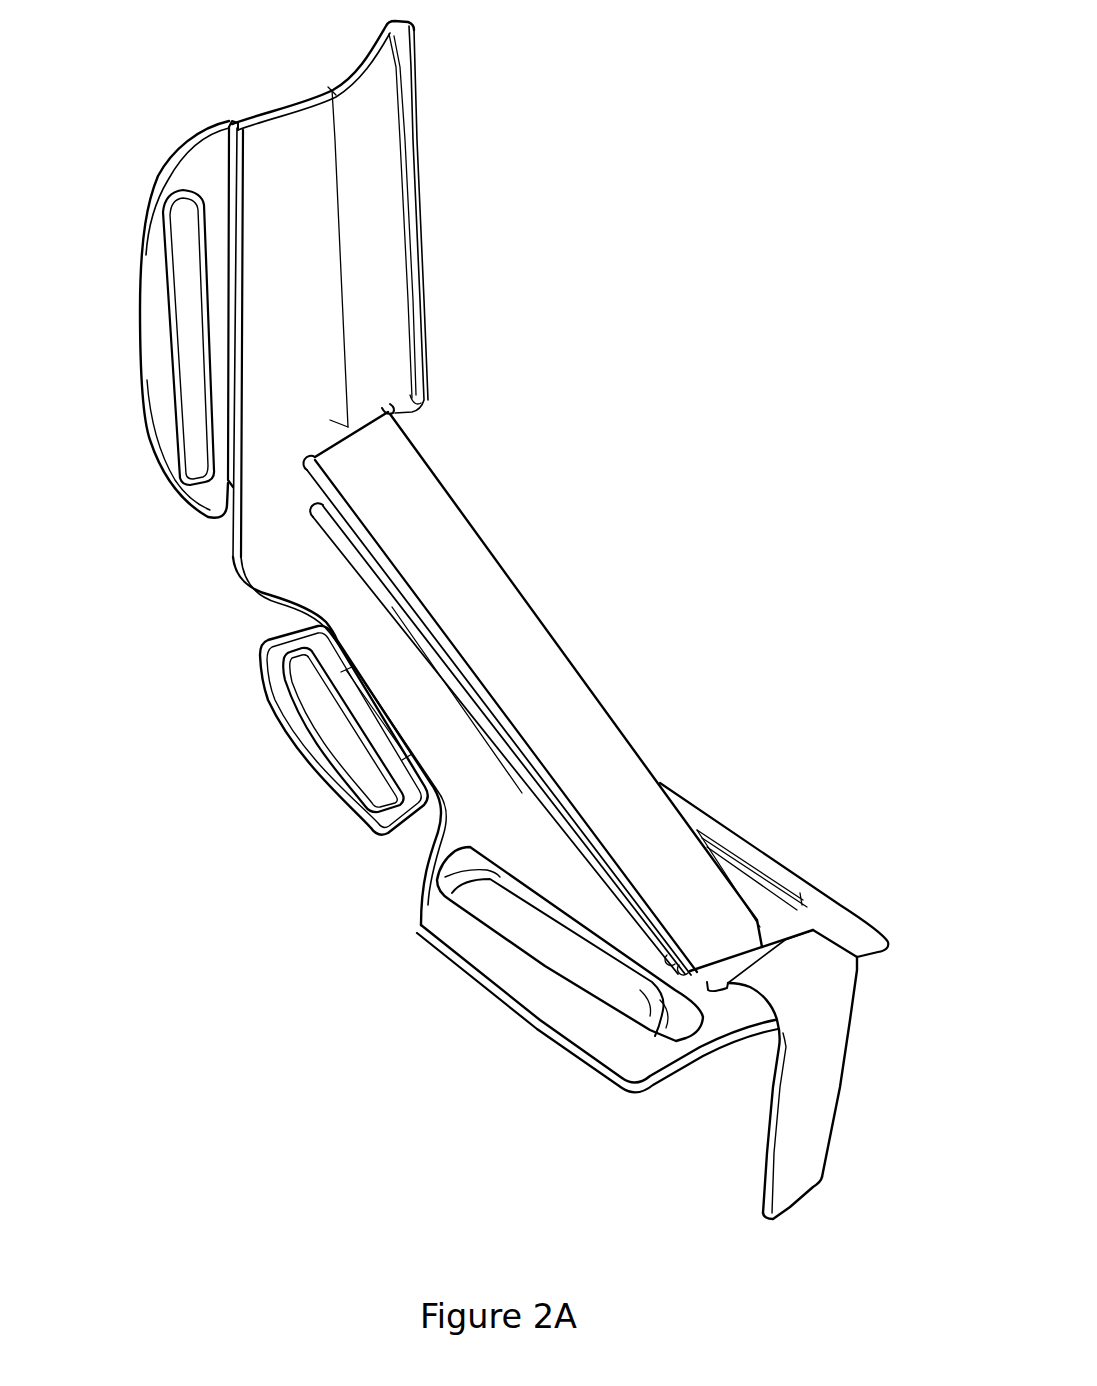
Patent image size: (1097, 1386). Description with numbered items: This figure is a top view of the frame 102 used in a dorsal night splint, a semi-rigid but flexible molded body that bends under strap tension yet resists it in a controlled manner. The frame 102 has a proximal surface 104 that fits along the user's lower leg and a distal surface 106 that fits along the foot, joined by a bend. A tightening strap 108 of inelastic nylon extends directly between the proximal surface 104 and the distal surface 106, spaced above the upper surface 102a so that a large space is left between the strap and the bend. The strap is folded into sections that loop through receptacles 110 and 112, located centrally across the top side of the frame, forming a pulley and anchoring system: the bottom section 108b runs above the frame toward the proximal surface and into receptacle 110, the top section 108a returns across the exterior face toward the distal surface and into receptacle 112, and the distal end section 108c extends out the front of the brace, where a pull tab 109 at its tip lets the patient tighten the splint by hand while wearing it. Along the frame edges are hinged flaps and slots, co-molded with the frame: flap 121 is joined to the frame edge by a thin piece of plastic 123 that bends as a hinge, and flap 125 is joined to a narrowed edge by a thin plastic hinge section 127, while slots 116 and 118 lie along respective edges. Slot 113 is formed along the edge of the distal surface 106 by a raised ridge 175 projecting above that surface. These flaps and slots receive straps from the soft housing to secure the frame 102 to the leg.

The frame 102 is at (835, 44).
The upper surface of the frame 102a is at (393, 328).
The proximal surface 104 is at (393, 238).
The distal surface 106 is at (557, 873).
The tightening strap 108 is at (530, 590).
The top section of the strap 108a is at (438, 492).
The bottom section of the strap 108b is at (335, 530).
The distal end section of the strap 108c is at (838, 1072).
The pull tab 109 is at (750, 1173).
The receptacle 110 is at (408, 402).
The receptacle 112 is at (720, 990).
The slot 113 is at (607, 1003).
The slot 116 is at (183, 305).
The slot 118 is at (360, 773).
The hinged flap 121 is at (150, 246).
The thin piece of plastic 123 is at (232, 122).
The hinged flap 125 is at (270, 676).
The thin plastic hinge section 127 is at (357, 693).
The raised ridge 175 is at (567, 927).